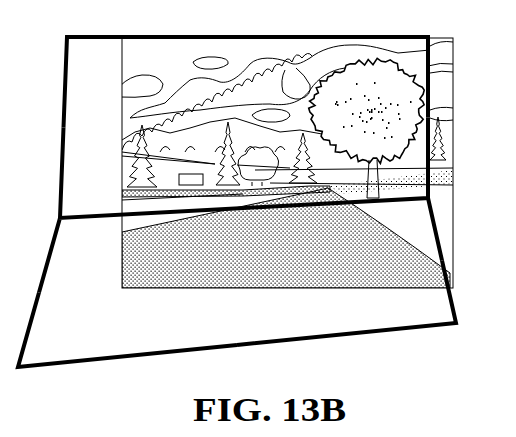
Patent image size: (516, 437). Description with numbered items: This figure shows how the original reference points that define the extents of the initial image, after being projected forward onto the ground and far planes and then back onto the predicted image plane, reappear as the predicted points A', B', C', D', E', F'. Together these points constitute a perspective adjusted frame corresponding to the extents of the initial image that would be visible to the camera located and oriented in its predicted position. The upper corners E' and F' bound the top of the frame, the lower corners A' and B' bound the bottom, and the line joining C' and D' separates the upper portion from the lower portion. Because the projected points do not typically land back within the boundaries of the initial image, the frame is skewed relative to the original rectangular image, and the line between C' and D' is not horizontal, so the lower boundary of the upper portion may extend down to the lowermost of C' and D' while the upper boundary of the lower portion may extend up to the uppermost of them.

The predicted point A' is at (122, 346).
The predicted point B' is at (355, 307).
The predicted point C' is at (139, 210).
The predicted point D' is at (350, 189).
The predicted point E' is at (146, 71).
The predicted point F' is at (348, 66).